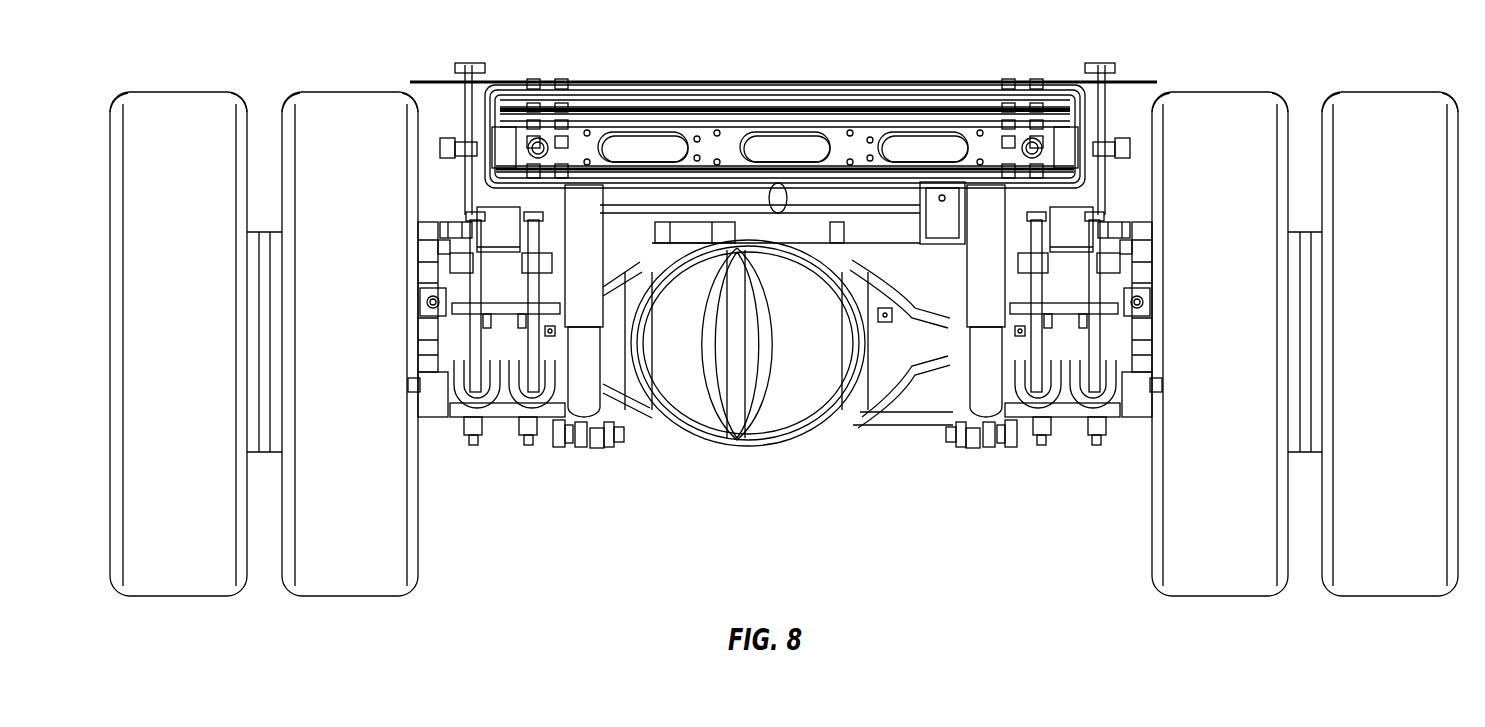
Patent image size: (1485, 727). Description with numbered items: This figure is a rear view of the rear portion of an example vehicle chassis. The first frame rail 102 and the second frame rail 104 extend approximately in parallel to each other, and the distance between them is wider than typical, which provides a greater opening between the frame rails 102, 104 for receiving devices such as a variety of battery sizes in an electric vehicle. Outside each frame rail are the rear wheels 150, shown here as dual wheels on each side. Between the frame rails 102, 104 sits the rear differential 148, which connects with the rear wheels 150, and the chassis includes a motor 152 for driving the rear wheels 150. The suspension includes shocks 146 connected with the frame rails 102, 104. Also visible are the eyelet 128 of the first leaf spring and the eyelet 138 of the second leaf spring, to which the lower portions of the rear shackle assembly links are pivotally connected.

The first frame rail 102 is at (1052, 77).
The second frame rail 104 is at (512, 77).
The eyelet 128 is at (1077, 237).
The eyelet 138 is at (488, 237).
The shocks 146 is at (590, 398).
The rear differential 148 is at (787, 412).
The wheels 150 is at (172, 107).
The motor 152 is at (898, 408).